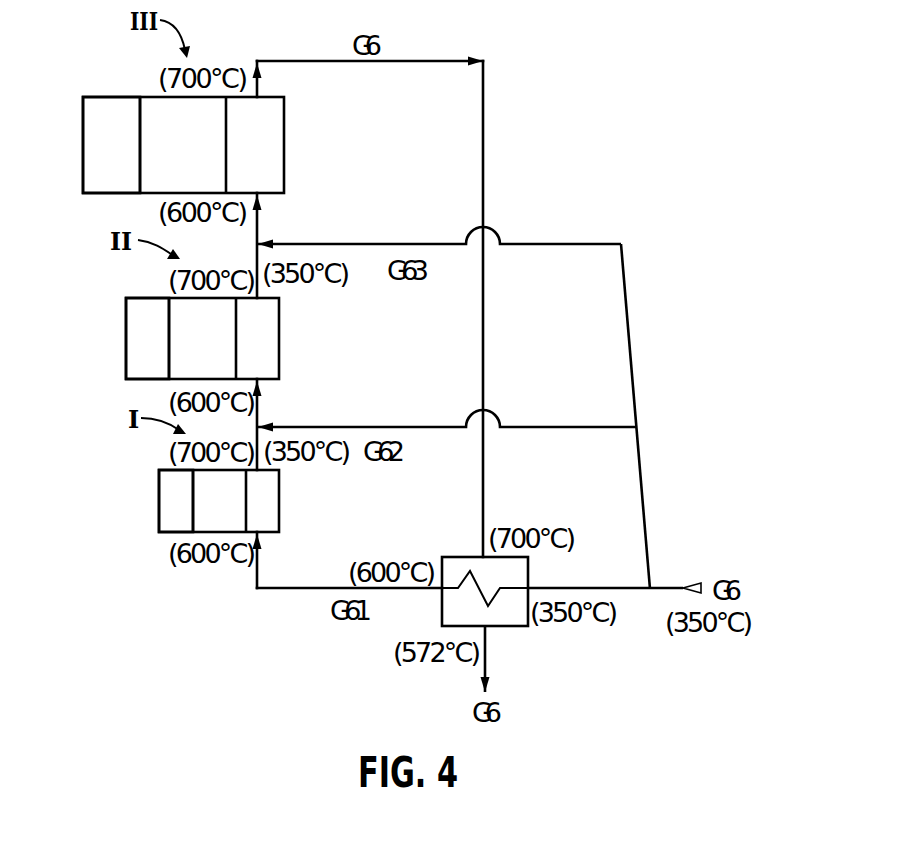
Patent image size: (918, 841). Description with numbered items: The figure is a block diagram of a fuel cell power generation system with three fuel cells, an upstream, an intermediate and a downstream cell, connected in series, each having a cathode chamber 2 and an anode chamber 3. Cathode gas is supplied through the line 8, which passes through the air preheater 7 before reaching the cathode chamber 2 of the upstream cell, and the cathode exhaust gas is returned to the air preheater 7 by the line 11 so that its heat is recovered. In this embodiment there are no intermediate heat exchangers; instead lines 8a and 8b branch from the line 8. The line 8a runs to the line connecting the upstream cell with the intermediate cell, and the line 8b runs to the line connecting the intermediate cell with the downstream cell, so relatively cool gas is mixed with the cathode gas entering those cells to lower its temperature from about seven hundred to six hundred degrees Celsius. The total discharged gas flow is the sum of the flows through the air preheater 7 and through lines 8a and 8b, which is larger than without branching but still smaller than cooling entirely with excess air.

The cathode chamber 2 is at (279, 124).
The anode chamber 3 is at (100, 130).
The air preheater 7 is at (452, 556).
The line 8 is at (637, 592).
The line 8a is at (553, 427).
The line 8b is at (560, 244).
The line 11 is at (484, 668).